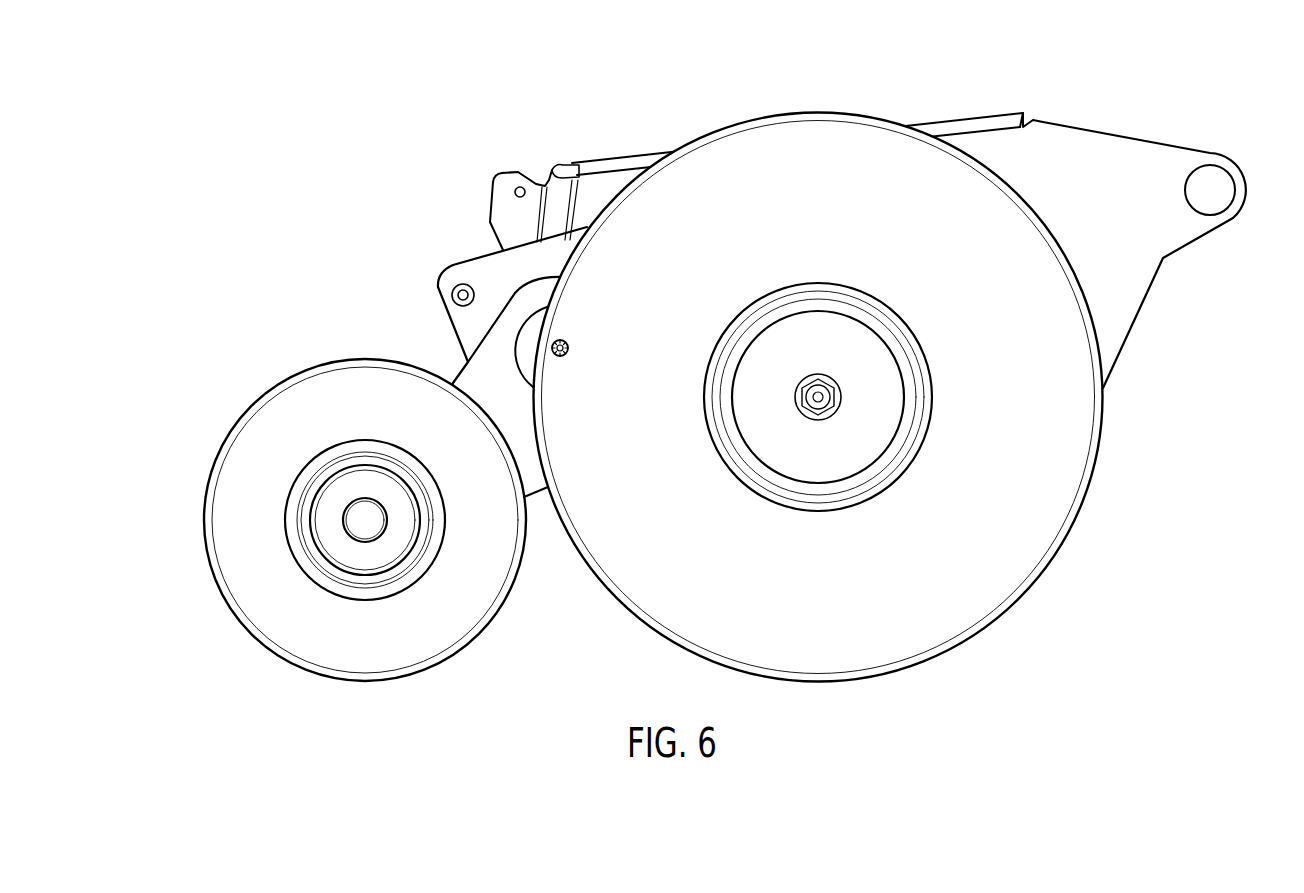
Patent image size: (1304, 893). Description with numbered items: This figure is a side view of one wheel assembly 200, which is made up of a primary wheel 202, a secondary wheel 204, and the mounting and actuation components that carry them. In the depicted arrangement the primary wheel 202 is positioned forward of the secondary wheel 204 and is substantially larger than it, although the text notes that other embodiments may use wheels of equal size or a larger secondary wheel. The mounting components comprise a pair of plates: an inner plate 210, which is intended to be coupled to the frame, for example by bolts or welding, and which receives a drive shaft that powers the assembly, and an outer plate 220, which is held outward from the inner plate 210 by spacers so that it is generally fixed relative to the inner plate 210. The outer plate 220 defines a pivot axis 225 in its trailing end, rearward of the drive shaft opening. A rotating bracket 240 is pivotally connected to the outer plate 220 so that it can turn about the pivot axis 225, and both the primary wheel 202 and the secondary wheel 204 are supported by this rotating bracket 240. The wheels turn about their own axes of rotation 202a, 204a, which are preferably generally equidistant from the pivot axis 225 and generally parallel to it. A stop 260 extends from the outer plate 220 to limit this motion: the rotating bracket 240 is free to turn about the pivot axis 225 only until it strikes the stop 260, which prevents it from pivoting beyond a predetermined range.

The wheel assembly 200 is at (350, 138).
The primary wheel 202 is at (987, 578).
The axis of rotation of the primary wheel 202a is at (823, 397).
The secondary wheel 204 is at (422, 630).
The axis of rotation of the secondary wheel 204a is at (364, 519).
The inner plate 210 is at (1062, 122).
The outer plate 220 is at (480, 275).
The pivot axis 225 is at (565, 342).
The rotating bracket 240 is at (528, 472).
The stop 260 is at (452, 294).